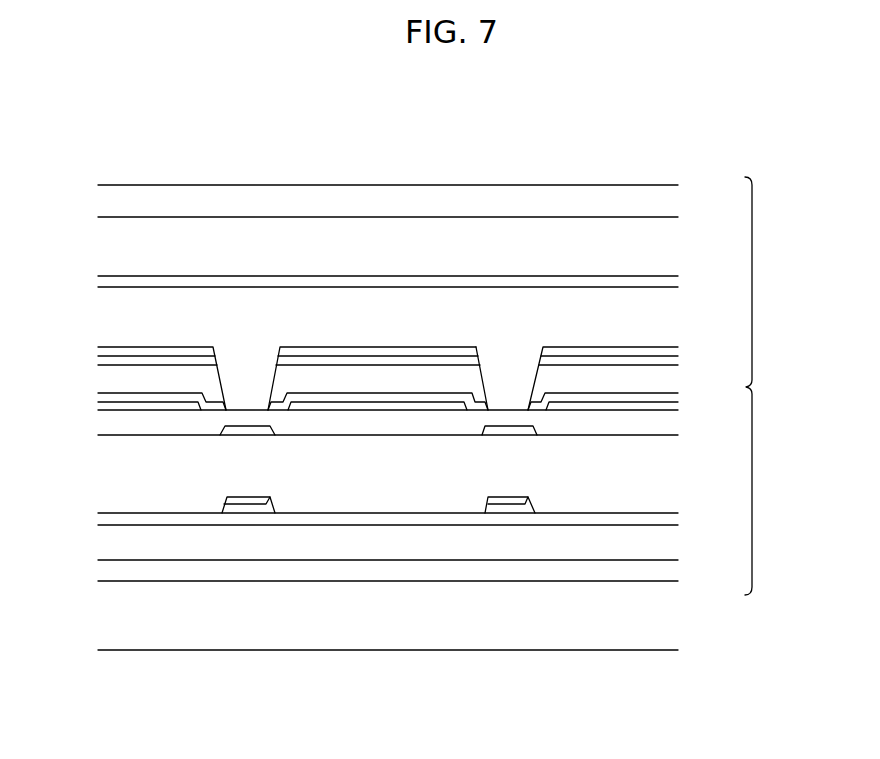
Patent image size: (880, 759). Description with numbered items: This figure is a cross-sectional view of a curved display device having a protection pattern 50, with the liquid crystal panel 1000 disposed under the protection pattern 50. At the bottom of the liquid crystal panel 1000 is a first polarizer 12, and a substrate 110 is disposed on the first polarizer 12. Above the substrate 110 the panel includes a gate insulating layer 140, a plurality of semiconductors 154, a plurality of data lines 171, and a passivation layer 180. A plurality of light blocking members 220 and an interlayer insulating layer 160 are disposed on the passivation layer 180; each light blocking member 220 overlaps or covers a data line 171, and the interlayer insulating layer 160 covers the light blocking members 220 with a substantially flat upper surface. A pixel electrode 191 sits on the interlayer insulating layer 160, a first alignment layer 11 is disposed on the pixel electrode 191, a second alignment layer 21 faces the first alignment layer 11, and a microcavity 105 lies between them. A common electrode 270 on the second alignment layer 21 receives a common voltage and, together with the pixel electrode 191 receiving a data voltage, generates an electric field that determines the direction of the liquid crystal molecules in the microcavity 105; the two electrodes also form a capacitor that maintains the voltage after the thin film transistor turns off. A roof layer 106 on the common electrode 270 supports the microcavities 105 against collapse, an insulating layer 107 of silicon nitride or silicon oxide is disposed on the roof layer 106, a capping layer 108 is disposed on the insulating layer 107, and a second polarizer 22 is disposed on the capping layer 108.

The liquid crystal panel 1000 is at (775, 386).
The second polarizer 22 is at (663, 198).
The capping layer 108 is at (663, 247).
The insulating layer 107 is at (667, 287).
The roof layer 106 is at (663, 318).
The second alignment layer 21 is at (398, 362).
The common electrode 270 is at (388, 272).
The light blocking member 220 is at (243, 428).
The microcavity 105 is at (485, 383).
The passivation layer 180 is at (663, 470).
The first alignment layer 11 is at (342, 398).
The pixel electrode 191 is at (413, 407).
The interlayer insulating layer 160 is at (137, 425).
The semiconductor 154 is at (237, 512).
The data line 171 is at (266, 502).
The gate insulating layer 140 is at (667, 518).
The substrate 110 is at (663, 545).
The first polarizer 12 is at (667, 568).
The protection pattern 50 is at (663, 628).